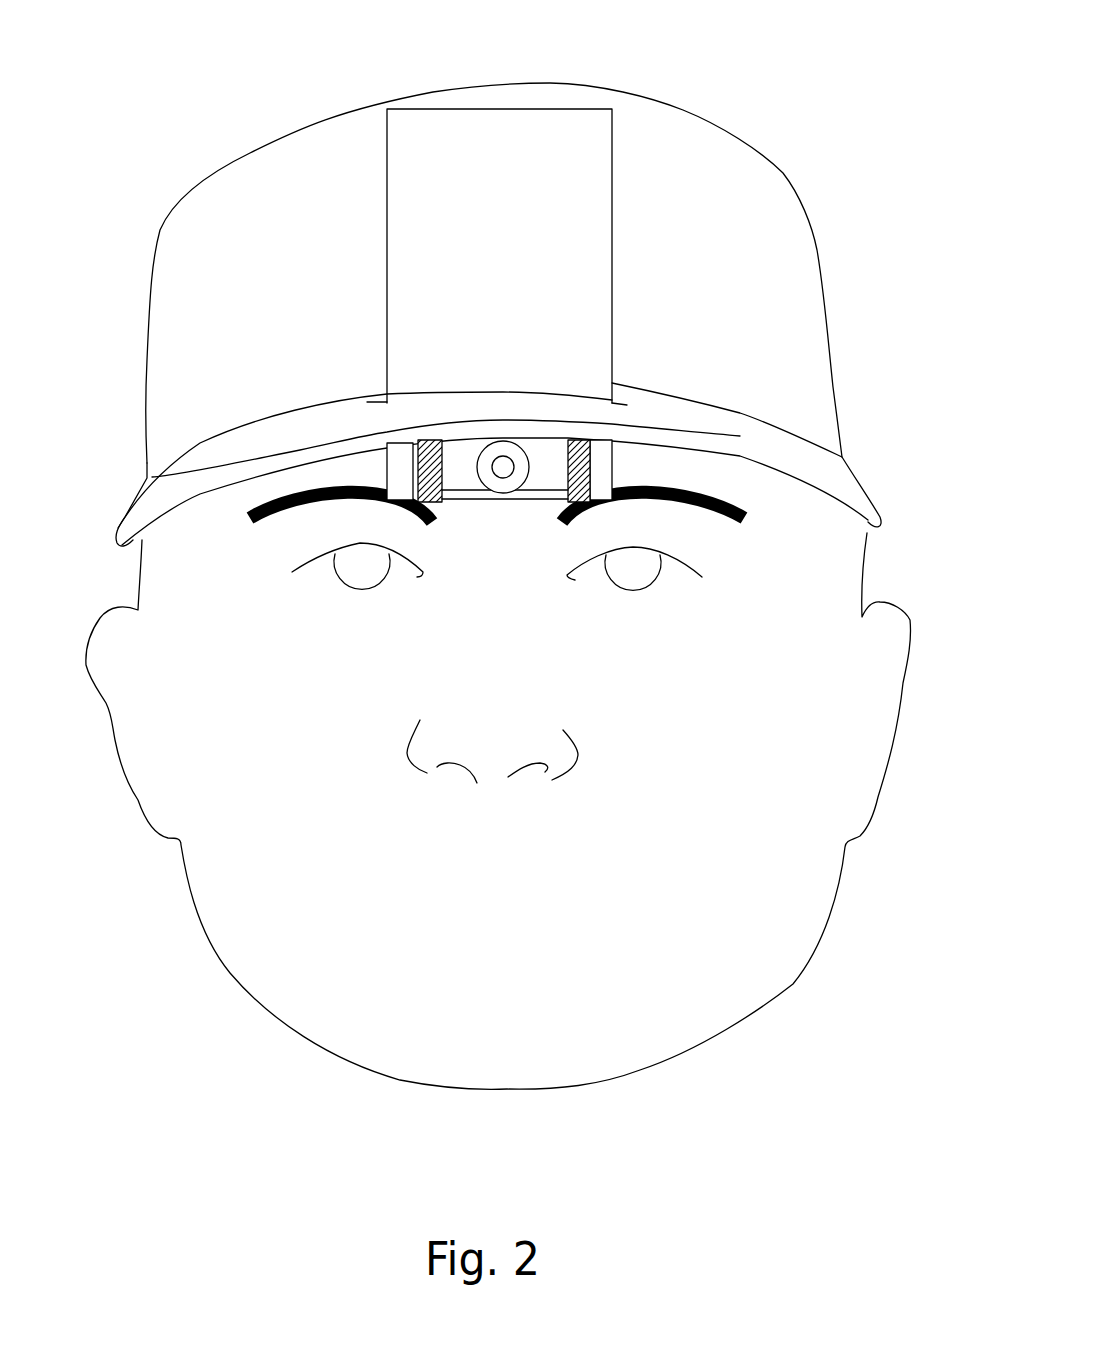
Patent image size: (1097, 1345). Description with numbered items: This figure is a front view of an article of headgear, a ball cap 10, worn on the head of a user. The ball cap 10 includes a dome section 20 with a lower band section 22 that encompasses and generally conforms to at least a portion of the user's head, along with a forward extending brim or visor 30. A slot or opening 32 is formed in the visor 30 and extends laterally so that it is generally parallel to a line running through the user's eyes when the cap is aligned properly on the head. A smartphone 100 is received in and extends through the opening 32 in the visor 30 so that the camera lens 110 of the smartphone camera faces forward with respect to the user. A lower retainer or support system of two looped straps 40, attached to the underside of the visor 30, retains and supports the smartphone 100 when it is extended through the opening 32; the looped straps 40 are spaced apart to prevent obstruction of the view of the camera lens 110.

The ball cap 10 is at (675, 95).
The dome section 20 is at (750, 192).
The band section 22 is at (143, 463).
The visor 30 is at (188, 473).
The opening 32 is at (627, 404).
The looped straps 40 is at (590, 462).
The smartphone 100 is at (405, 163).
The camera lens 110 is at (484, 452).